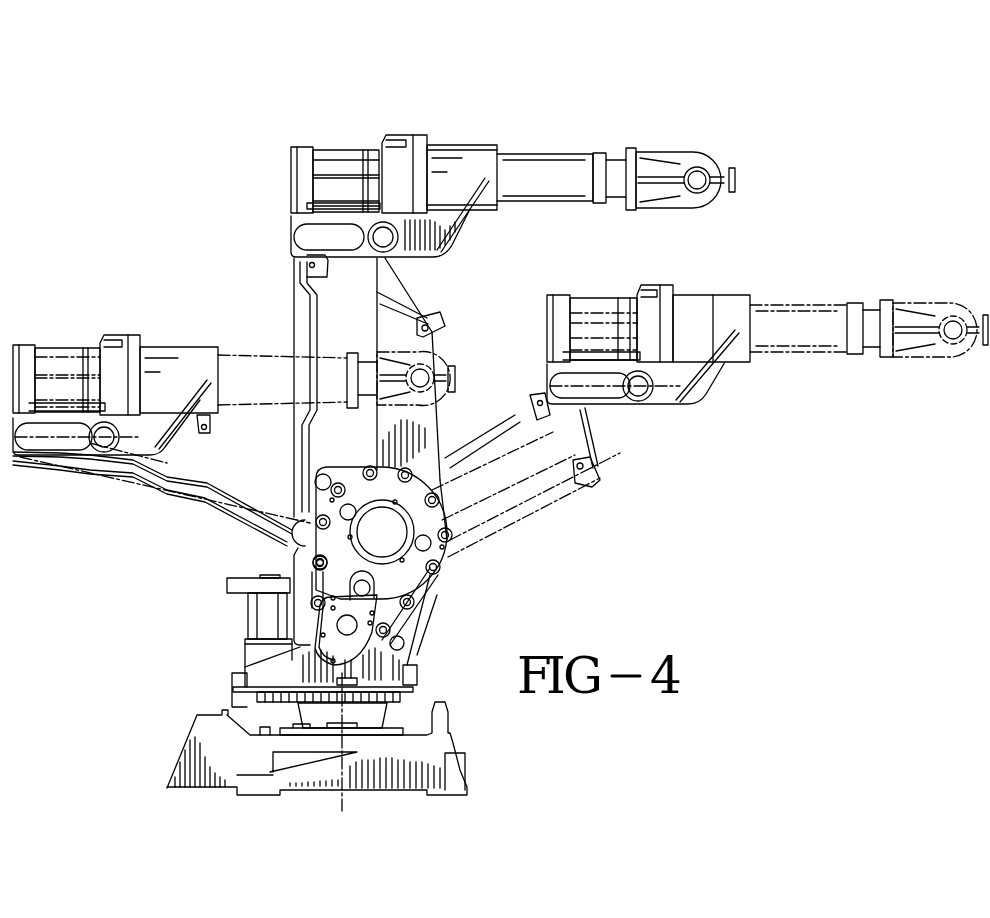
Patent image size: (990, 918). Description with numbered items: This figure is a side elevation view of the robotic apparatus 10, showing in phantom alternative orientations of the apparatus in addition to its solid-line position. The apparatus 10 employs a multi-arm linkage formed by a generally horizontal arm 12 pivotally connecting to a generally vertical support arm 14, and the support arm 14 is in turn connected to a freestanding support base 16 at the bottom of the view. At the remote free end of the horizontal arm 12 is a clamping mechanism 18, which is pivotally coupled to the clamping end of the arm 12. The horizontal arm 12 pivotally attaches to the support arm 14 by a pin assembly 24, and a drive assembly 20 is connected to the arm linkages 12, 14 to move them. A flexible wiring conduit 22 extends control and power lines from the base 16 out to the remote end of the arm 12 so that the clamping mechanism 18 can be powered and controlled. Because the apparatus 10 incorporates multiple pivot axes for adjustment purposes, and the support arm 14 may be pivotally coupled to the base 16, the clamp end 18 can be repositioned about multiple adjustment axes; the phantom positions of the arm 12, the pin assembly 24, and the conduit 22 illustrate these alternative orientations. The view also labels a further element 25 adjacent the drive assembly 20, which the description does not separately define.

The robotic apparatus 10 is at (228, 182).
The horizontal arm 12 is at (538, 172).
The support arm 14 is at (397, 322).
The support base 16 is at (410, 790).
The clamping mechanism 18 is at (708, 160).
The drive assembly 20 is at (432, 517).
The flexible wiring conduit 22 is at (308, 325).
The pin assembly 24 is at (333, 170).
The motor 25 is at (382, 542).